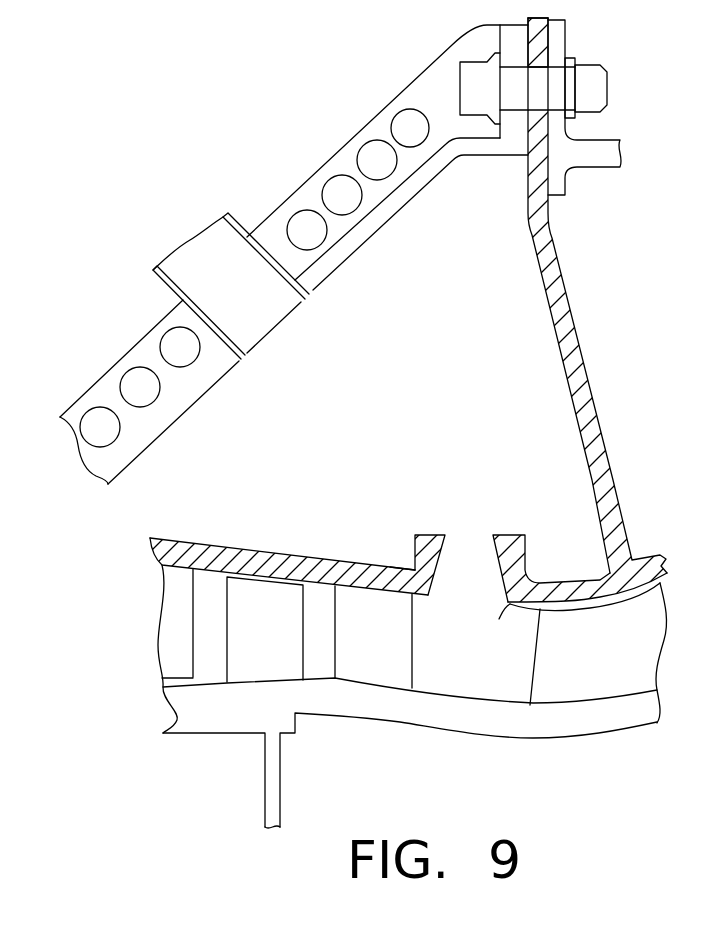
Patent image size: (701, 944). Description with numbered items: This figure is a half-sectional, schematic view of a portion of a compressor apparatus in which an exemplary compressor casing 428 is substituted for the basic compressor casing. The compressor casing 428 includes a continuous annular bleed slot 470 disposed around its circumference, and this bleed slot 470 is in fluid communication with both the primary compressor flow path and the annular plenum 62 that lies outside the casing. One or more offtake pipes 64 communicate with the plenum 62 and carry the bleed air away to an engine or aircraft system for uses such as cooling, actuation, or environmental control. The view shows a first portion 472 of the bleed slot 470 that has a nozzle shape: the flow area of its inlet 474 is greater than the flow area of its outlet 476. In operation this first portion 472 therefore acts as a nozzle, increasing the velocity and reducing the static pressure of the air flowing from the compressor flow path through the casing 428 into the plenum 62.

The plenum 62 is at (437, 292).
The offtake pipe 64 is at (236, 221).
The compressor casing 428 is at (184, 549).
The annular bleed slot 470 is at (390, 540).
The first portion of the bleed slot 472 is at (510, 541).
The inlet of the first portion 474 is at (507, 600).
The outlet of the first portion 476 is at (447, 535).